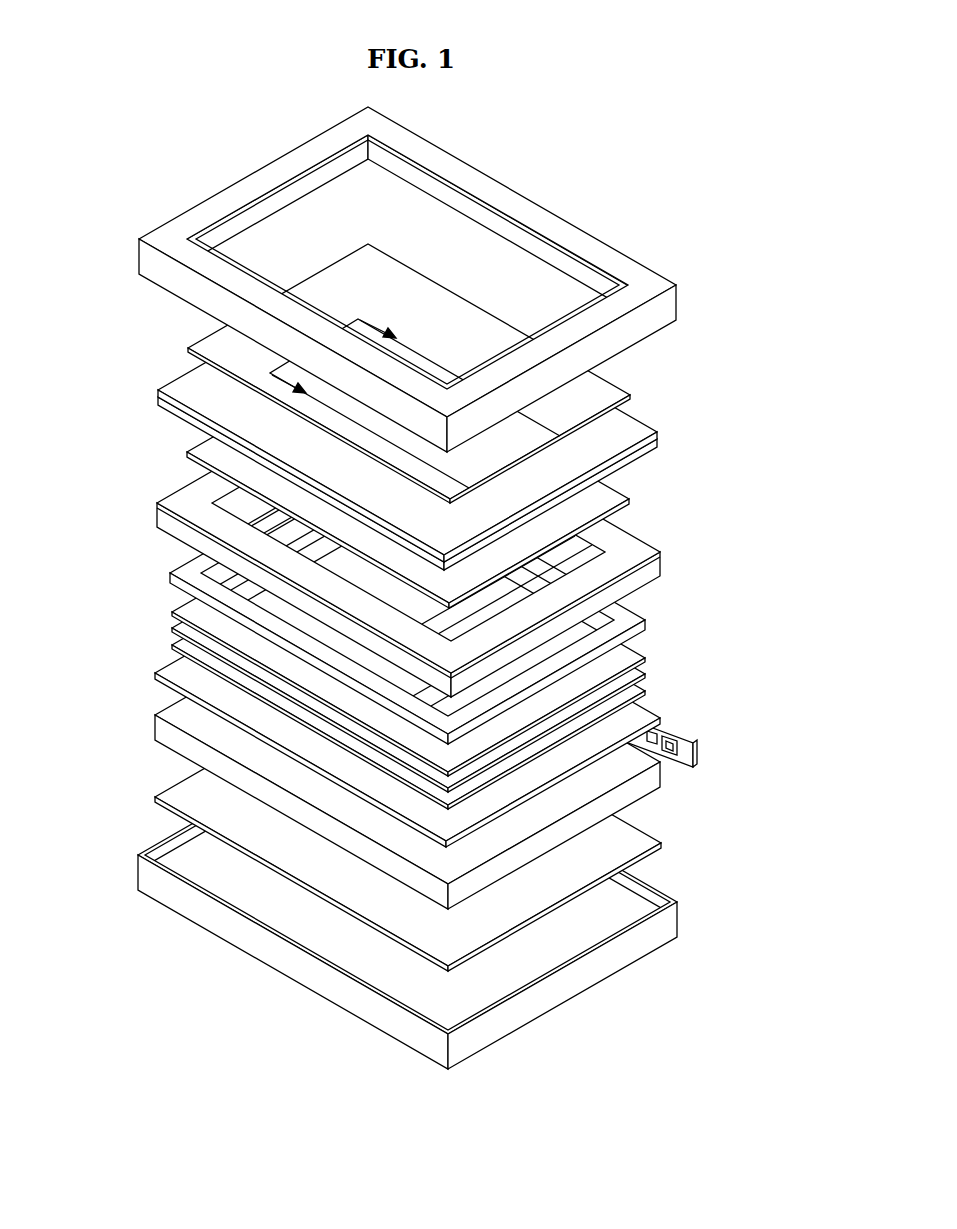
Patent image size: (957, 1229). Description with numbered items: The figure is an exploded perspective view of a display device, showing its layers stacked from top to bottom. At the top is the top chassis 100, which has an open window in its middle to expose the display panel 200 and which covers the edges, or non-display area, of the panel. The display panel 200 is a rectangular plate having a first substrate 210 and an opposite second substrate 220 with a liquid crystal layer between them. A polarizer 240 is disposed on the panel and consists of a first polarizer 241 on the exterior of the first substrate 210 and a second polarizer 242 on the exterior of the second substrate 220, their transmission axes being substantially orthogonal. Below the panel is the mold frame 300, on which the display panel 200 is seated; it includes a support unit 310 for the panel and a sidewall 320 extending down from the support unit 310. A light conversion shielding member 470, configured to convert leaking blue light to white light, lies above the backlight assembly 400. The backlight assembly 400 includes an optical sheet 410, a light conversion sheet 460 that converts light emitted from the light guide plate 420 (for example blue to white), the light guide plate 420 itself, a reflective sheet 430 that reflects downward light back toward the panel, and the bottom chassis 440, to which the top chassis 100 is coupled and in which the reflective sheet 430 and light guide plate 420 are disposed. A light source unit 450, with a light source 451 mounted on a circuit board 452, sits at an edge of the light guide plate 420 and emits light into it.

The top chassis 100 is at (660, 312).
The display panel 200 is at (735, 417).
The first substrate 210 is at (640, 457).
The second substrate 220 is at (640, 427).
The polarizer 240 is at (98, 338).
The first polarizer 241 is at (218, 452).
The second polarizer 242 is at (218, 345).
The mold frame 300 is at (88, 490).
The support unit 310 is at (213, 490).
The sidewall 320 is at (175, 530).
The backlight assembly 400 is at (66, 568).
The optical sheet 410 is at (172, 613).
The light guide plate 420 is at (165, 732).
The reflective sheet 430 is at (163, 806).
The bottom chassis 440 is at (152, 873).
The light source unit 450 is at (760, 722).
The light source 451 is at (675, 738).
The circuit board 452 is at (682, 759).
The light conversion sheet 460 is at (168, 674).
The light conversion shielding member 470 is at (185, 575).